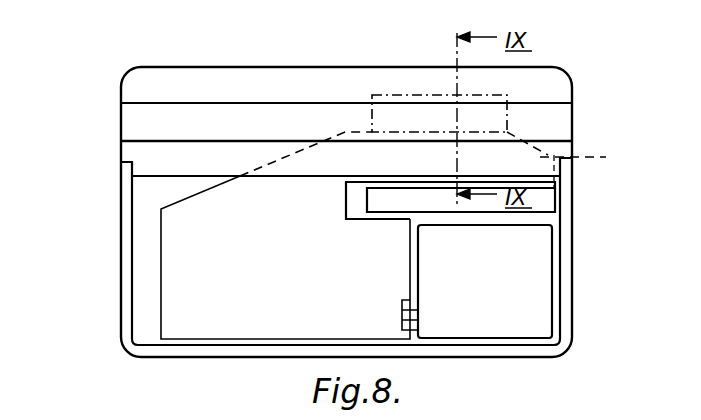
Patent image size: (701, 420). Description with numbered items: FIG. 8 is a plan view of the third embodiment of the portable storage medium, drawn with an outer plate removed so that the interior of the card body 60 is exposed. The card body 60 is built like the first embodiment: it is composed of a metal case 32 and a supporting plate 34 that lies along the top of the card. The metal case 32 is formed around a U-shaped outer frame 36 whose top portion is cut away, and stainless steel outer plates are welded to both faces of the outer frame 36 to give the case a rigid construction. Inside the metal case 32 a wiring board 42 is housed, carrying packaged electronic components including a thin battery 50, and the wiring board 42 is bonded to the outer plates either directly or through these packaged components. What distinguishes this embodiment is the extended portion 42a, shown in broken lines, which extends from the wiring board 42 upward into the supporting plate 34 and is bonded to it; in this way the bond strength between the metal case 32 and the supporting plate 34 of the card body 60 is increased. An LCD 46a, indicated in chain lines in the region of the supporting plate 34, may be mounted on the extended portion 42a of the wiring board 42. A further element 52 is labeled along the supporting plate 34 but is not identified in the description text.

The metal case 32 is at (119, 291).
The supporting plate 34 is at (279, 76).
The outer frame 36 is at (121, 249).
The wiring board 42 is at (280, 313).
The extended portion 42a is at (578, 160).
The LCD 46a is at (395, 94).
The thin battery 50 is at (493, 313).
The rail 52 is at (556, 125).
The card body 60 is at (118, 157).